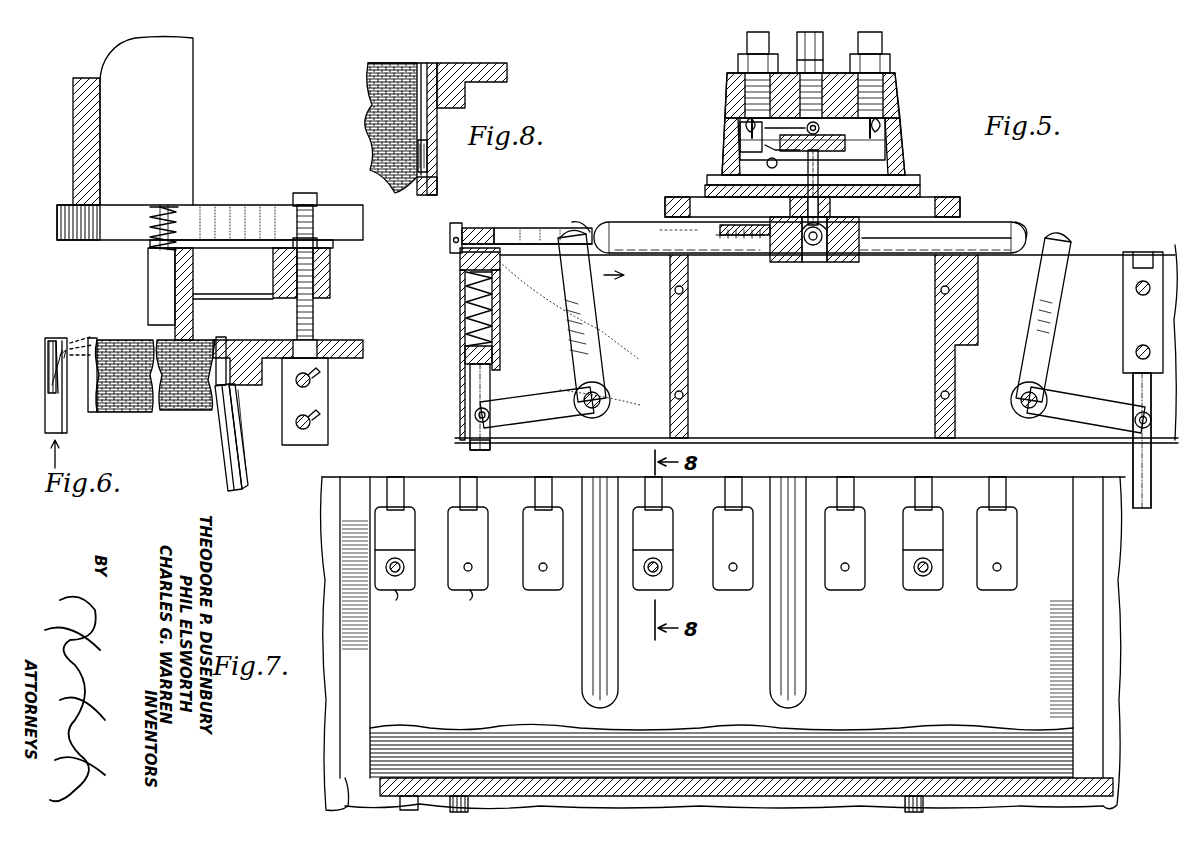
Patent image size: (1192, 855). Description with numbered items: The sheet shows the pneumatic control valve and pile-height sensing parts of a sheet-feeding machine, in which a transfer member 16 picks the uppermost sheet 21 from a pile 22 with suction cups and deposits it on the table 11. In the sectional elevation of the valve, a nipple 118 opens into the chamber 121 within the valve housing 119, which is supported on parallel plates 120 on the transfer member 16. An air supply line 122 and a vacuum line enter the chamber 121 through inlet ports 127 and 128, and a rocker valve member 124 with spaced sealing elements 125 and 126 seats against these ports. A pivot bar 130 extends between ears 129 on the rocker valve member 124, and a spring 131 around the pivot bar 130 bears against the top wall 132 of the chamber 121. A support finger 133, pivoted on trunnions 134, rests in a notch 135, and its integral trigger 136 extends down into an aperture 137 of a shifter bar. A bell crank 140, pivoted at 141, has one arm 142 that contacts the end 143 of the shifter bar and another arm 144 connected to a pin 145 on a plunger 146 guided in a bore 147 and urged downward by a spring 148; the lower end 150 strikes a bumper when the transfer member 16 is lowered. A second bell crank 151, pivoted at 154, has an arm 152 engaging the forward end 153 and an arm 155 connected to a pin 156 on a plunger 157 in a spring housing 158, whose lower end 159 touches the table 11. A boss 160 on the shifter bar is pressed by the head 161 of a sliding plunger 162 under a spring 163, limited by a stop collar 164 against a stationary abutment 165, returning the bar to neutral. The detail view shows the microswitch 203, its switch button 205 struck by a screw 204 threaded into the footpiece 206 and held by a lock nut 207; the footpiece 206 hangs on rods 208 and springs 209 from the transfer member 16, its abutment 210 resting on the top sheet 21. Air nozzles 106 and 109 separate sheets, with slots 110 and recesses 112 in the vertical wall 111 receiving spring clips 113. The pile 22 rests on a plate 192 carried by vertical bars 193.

In FIG. 6, the table 11 is at (355, 352).
In FIG. 6, the transfer member 16 is at (97, 236).
In FIG. 5, the transfer member 16 is at (1115, 256).
In FIG. 6, the sheet 21 is at (143, 340).
In FIG. 8, the sheet 21 is at (395, 63).
In FIG. 6, the pile 22 is at (186, 410).
In FIG. 8, the pile 22 is at (382, 128).
In FIG. 7, the pile 22 is at (900, 728).
In FIG. 6, the air nozzle 106 is at (55, 338).
In FIG. 6, the air nozzle 109 is at (229, 418).
In FIG. 7, the air nozzle 109 is at (622, 478).
In FIG. 6, the slot 110 is at (220, 447).
In FIG. 7, the slot 110 is at (582, 612).
In FIG. 8, the vertical wall 111 is at (437, 187).
In FIG. 7, the vertical wall 111 is at (1062, 604).
In FIG. 8, the recess 112 is at (437, 168).
In FIG. 7, the recess 112 is at (455, 590).
In FIG. 6, the spring clip 113 is at (97, 338).
In FIG. 8, the spring clip 113 is at (438, 62).
In FIG. 7, the spring clip 113 is at (398, 538).
In FIG. 5, the nipple 118 is at (800, 48).
In FIG. 5, the valve housing 119 is at (895, 97).
In FIG. 5, the parallel plates 120 is at (668, 215).
In FIG. 5, the chamber 121 is at (892, 155).
In FIG. 5, the air supply line 122 is at (740, 52).
In FIG. 5, the rocker valve member 124 is at (872, 132).
In FIG. 5, the sealing element 125 is at (888, 50).
In FIG. 5, the sealing element 126 is at (884, 125).
In FIG. 5, the inlet port 127 is at (748, 100).
In FIG. 5, the inlet port 128 is at (880, 112).
In FIG. 5, the ears 129 is at (762, 138).
In FIG. 5, the pivot bar 130 is at (787, 160).
In FIG. 5, the spring 131 is at (826, 62).
In FIG. 5, the top wall 132 is at (740, 128).
In FIG. 5, the support finger 133 is at (820, 152).
In FIG. 5, the trunnions 134 is at (830, 200).
In FIG. 5, the notch 135 is at (820, 128).
In FIG. 5, the trigger 136 is at (815, 246).
In FIG. 5, the aperture 137 is at (832, 262).
In FIG. 5, the bell crank 140 is at (537, 325).
In FIG. 5, the pivot 141 is at (600, 395).
In FIG. 5, the arm 142 is at (575, 290).
In FIG. 5, the end 143 is at (597, 225).
In FIG. 5, the arm 144 is at (535, 402).
In FIG. 5, the pin 145 is at (475, 410).
In FIG. 5, the plunger 146 is at (472, 383).
In FIG. 5, the bore 147 is at (467, 362).
In FIG. 5, the spring 148 is at (462, 302).
In FIG. 5, the lower end 150 is at (478, 450).
In FIG. 5, the bell crank 151 is at (1064, 345).
In FIG. 5, the arm 152 is at (1058, 297).
In FIG. 5, the forward end 153 is at (1025, 226).
In FIG. 5, the pivot 154 is at (1015, 398).
In FIG. 5, the arm 155 is at (1083, 400).
In FIG. 5, the pin 156 is at (1138, 430).
In FIG. 5, the plunger 157 is at (1135, 466).
In FIG. 5, the spring housing 158 is at (916, 245).
In FIG. 5, the lower end 159 is at (683, 250).
In FIG. 5, the boss 160 is at (850, 238).
In FIG. 5, the head 161 is at (793, 262).
In FIG. 5, the sliding plunger 162 is at (476, 232).
In FIG. 5, the spring 163 is at (752, 262).
In FIG. 5, the stop collar 164 is at (450, 236).
In FIG. 5, the stationary abutment 165 is at (462, 228).
In FIG. 7, the plate 192 is at (380, 785).
In FIG. 7, the vertical bar 193 is at (405, 805).
In FIG. 6, the microswitch 203 is at (320, 397).
In FIG. 6, the screw 204 is at (314, 313).
In FIG. 6, the switch button 205 is at (313, 342).
In FIG. 6, the footpiece 206 is at (322, 268).
In FIG. 6, the lock nut 207 is at (318, 244).
In FIG. 6, the rod 208 is at (150, 228).
In FIG. 6, the spring 209 is at (162, 208).
In FIG. 6, the abutment 210 is at (222, 340).